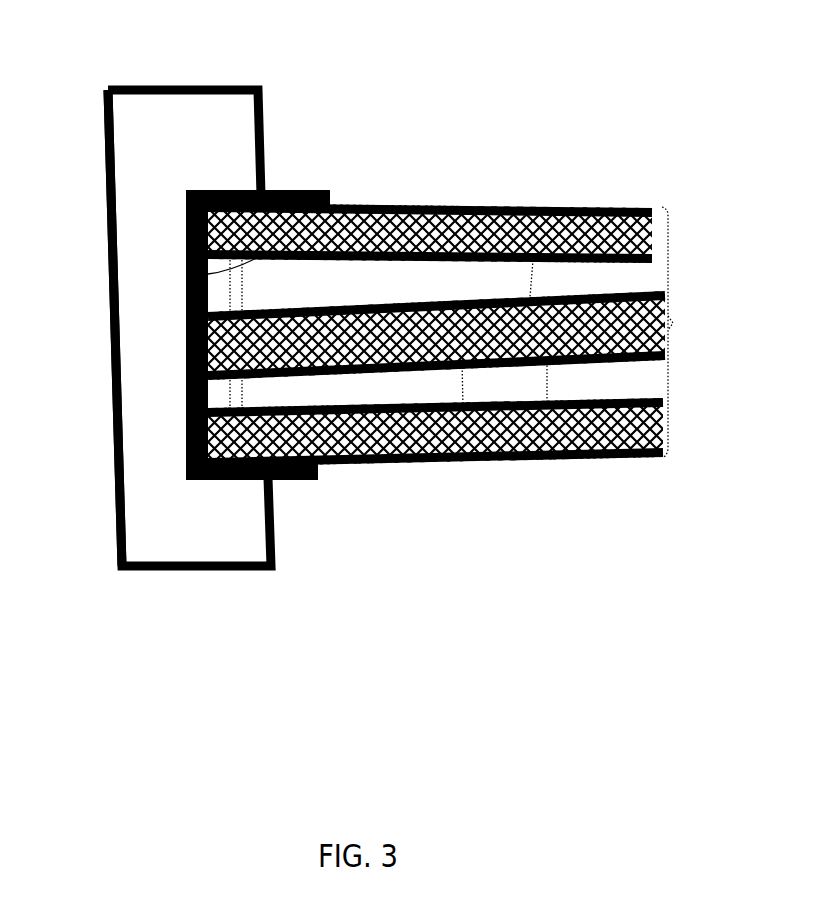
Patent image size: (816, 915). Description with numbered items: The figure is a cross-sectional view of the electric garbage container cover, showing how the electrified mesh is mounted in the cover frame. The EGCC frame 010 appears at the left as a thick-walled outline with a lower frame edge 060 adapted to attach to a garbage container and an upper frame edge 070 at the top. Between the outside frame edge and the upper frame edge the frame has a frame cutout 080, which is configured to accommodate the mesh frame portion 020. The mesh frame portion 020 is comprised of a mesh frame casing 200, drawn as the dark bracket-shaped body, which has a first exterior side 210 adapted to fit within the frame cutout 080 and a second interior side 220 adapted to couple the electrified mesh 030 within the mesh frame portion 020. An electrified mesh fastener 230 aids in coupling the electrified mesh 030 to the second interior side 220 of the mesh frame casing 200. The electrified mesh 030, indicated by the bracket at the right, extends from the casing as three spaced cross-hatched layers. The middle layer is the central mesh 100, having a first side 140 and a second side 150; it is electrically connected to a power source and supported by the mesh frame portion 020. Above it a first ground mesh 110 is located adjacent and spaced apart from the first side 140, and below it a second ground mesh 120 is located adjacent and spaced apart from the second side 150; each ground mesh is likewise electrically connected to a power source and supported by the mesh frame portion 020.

The EGCC frame 010 is at (138, 392).
The mesh frame portion 020 is at (275, 190).
The electrified mesh 030 is at (672, 324).
The lower frame edge 060 is at (183, 540).
The upper frame edge 070 is at (180, 108).
The frame cutout 080 is at (183, 248).
The central mesh 100 is at (480, 460).
The first ground mesh 110 is at (448, 203).
The second ground mesh 120 is at (390, 458).
The first side 140 is at (565, 207).
The second side 150 is at (566, 458).
The mesh frame casing 200 is at (183, 334).
The first exterior side 210 is at (183, 467).
The second interior side 220 is at (310, 190).
The electrified mesh fastener 230 is at (280, 493).